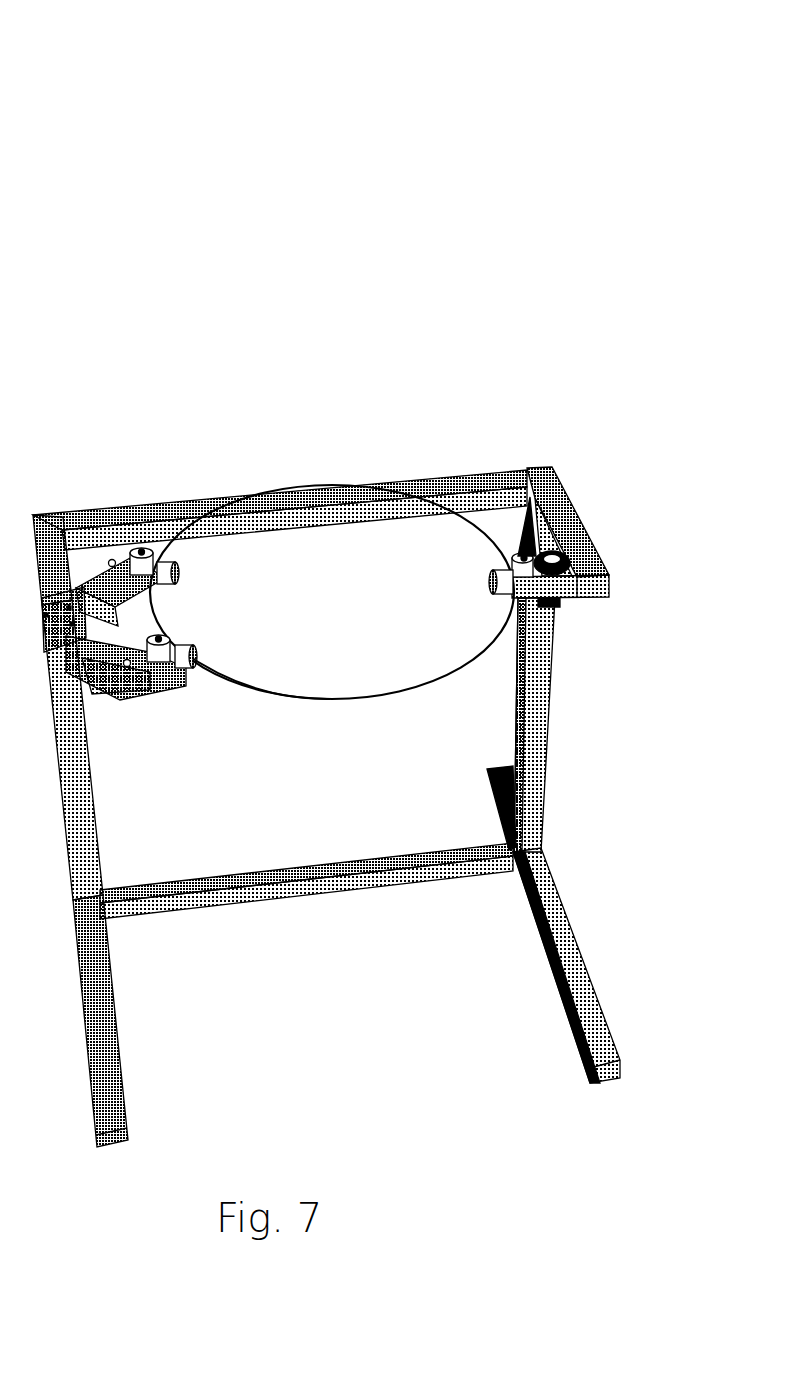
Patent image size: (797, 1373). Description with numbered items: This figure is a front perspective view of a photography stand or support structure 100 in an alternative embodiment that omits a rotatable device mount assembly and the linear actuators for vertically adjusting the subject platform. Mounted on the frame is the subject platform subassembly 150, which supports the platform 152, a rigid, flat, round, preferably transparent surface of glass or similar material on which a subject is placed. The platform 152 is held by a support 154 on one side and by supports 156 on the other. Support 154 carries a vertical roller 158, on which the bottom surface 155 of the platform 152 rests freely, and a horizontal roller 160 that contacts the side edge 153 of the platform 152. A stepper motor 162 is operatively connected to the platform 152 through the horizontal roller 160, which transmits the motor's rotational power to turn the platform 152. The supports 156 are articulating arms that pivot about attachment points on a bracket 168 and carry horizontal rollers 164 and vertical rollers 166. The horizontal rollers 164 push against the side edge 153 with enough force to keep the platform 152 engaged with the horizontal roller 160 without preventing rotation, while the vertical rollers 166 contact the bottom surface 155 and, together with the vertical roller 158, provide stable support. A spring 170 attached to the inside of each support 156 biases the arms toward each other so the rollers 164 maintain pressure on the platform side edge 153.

The support structure 100 is at (336, 581).
The subject platform subassembly 150 is at (350, 588).
The platform 152 is at (332, 592).
The side edge 153 is at (255, 691).
The support 154 is at (581, 658).
The bottom surface 155 is at (416, 729).
The supports 156 is at (136, 690).
The vertical roller 158 is at (462, 603).
The horizontal roller 160 is at (483, 505).
The stepper motor 162 is at (484, 483).
The horizontal rollers 164 is at (190, 558).
The vertical rollers 166 is at (228, 662).
The bracket 168 is at (103, 831).
The spring 170 is at (96, 545).